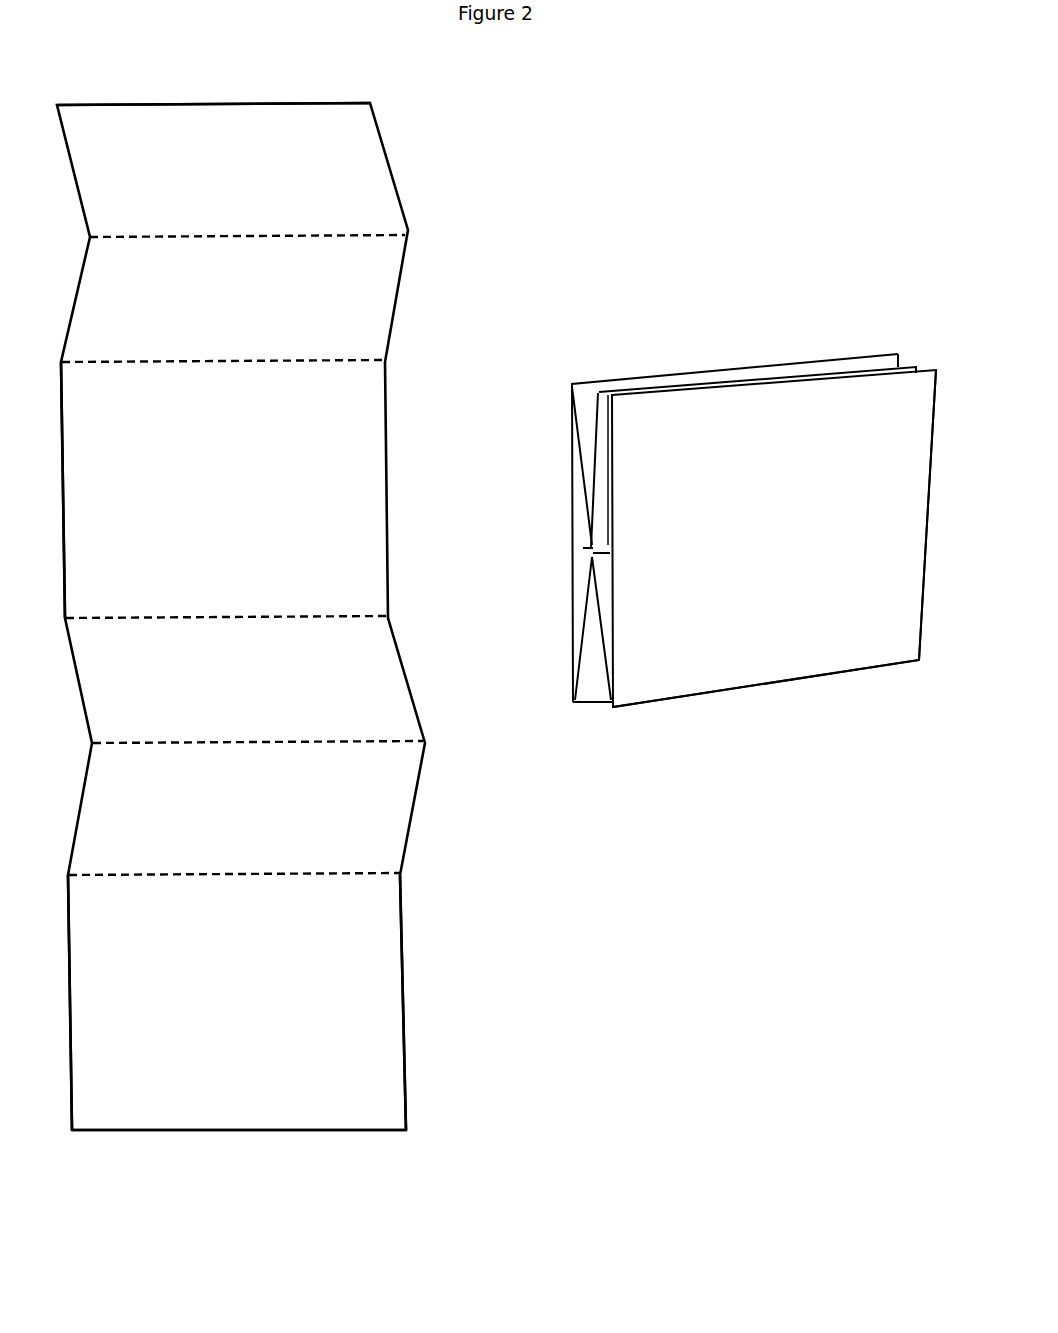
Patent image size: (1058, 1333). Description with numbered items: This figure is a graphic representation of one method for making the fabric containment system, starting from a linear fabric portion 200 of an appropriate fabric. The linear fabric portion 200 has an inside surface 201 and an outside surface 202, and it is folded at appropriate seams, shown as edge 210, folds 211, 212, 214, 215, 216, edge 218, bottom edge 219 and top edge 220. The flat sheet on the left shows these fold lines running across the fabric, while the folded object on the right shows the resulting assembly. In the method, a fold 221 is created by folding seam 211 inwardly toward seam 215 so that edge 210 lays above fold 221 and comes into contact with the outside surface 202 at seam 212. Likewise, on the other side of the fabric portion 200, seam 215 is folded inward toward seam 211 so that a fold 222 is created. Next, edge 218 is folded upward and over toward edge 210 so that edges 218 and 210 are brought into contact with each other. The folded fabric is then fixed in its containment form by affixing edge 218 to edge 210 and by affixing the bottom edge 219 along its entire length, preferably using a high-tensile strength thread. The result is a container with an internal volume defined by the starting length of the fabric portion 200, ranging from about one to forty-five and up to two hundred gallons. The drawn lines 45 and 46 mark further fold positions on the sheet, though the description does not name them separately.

The linear fabric portion 200 is at (438, 242).
The edge 210 is at (315, 98).
The fold 221 is at (177, 148).
The fold 211 is at (342, 228).
The fold 212 is at (325, 352).
The outside surface 202 is at (67, 515).
The inside surface 201 is at (327, 467).
The fold 214 is at (567, 612).
The fourth fold line 45 is at (342, 735).
The fifth fold line 46 is at (340, 877).
The fold 222 is at (592, 708).
The top edge 220 is at (407, 1008).
The edge 218 is at (333, 1122).
The bottom edge 219 is at (80, 1070).
The fold 215 is at (583, 548).
The fold 216 is at (595, 624).